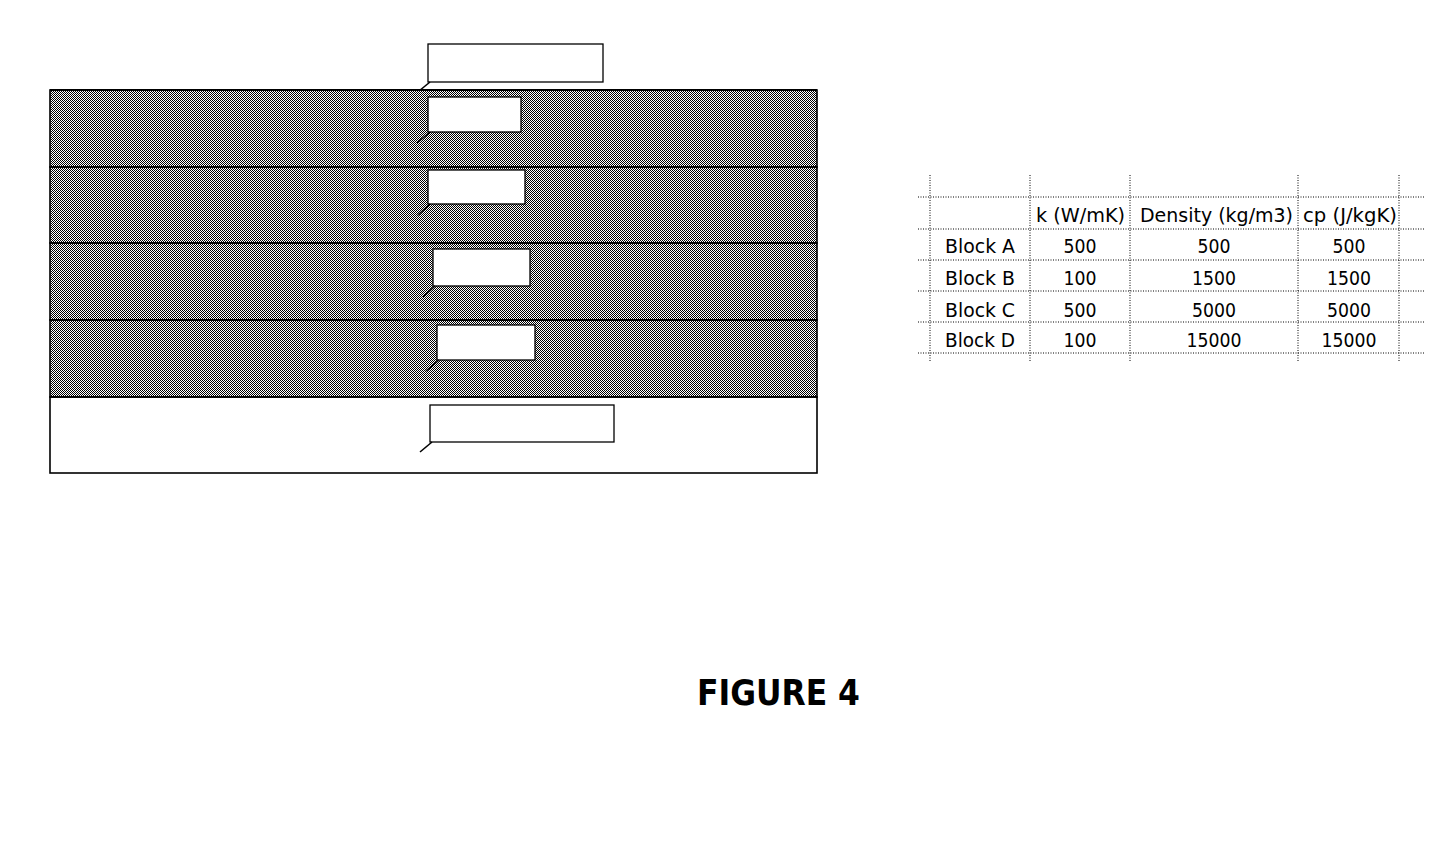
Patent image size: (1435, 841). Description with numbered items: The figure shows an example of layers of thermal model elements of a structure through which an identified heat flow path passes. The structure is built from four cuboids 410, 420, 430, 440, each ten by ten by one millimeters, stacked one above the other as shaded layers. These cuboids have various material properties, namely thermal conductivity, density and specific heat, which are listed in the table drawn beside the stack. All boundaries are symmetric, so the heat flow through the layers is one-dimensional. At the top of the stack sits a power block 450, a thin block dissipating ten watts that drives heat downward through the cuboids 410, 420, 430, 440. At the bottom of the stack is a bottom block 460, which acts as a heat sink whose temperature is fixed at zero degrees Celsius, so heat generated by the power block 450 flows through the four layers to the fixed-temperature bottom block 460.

The cuboid 410 is at (637, 133).
The cuboid 420 is at (637, 223).
The cuboid 430 is at (637, 295).
The cuboid 440 is at (637, 371).
The power block 450 is at (673, 78).
The bottom block 460 is at (720, 443).